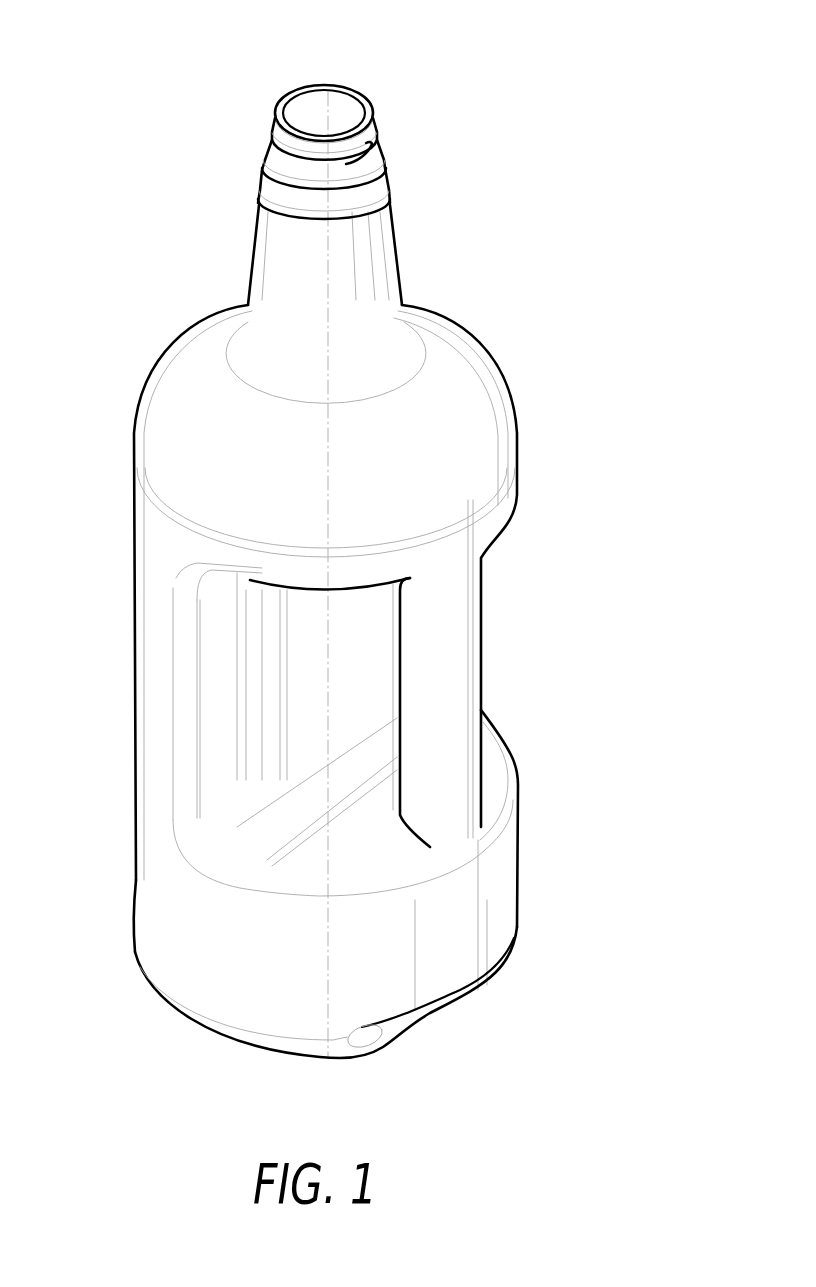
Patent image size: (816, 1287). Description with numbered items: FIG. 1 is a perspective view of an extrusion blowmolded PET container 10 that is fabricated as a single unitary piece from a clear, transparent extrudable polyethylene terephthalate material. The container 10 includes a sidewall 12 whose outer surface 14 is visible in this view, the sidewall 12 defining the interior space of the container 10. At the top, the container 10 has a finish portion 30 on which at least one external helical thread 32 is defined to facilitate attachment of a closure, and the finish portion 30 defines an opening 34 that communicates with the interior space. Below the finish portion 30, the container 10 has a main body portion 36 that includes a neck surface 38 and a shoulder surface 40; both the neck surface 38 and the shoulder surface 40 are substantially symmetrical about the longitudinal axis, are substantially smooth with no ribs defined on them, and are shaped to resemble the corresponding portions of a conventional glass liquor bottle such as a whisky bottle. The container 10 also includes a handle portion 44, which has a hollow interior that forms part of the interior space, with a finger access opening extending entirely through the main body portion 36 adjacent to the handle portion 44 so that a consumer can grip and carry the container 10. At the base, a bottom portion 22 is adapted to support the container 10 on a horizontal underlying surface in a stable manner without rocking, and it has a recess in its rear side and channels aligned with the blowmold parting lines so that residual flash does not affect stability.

The container 10 is at (332, 566).
The sidewall 12 is at (478, 467).
The outer surface 14 is at (153, 442).
The bottom portion 22 is at (283, 1057).
The finish portion 30 is at (380, 160).
The external helical thread 32 is at (383, 133).
The opening 34 is at (318, 100).
The main body portion 36 is at (130, 712).
The neck surface 38 is at (273, 268).
The shoulder surface 40 is at (185, 383).
The handle portion 44 is at (467, 683).